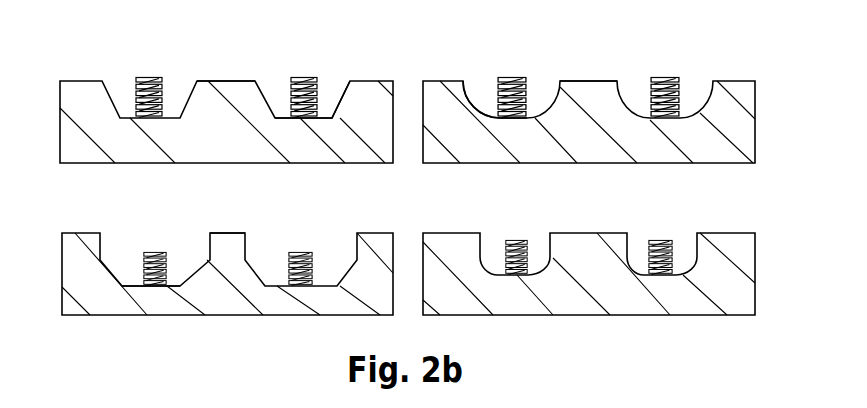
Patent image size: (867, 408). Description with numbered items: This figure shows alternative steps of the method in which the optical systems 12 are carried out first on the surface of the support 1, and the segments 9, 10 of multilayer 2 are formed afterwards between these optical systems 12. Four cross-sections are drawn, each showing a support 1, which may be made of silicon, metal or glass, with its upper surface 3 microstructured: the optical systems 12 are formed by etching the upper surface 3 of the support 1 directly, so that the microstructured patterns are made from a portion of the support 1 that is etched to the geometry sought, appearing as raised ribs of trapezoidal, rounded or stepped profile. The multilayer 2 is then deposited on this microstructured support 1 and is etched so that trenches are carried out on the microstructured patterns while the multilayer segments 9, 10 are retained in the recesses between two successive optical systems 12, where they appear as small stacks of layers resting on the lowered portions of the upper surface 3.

The support 1 is at (78, 146).
The multilayer 2 is at (318, 93).
The upper surface 3 is at (180, 283).
The segment 9 is at (148, 75).
The segment 10 is at (305, 75).
The optical system 12 is at (233, 92).